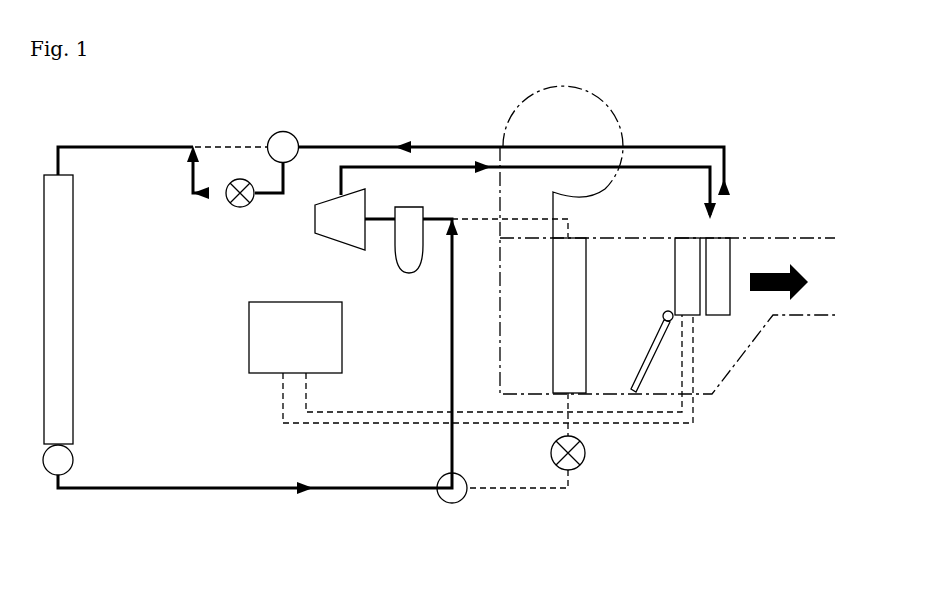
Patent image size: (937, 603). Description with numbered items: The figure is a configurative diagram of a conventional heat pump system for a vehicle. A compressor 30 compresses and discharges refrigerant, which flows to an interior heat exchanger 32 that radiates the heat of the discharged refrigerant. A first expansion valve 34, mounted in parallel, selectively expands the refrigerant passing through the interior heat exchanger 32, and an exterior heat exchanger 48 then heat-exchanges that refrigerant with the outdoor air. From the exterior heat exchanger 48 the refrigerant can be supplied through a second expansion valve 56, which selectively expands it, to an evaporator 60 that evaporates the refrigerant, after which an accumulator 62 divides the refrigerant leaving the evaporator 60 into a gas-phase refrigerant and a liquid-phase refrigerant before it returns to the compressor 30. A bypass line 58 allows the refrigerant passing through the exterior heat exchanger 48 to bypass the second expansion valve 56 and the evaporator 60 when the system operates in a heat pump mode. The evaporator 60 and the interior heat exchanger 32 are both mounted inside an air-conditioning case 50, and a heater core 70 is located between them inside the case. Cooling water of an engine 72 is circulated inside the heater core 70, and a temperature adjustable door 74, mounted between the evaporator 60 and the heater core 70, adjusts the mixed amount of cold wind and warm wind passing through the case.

The compressor 30 is at (327, 200).
The interior heat exchanger 32 is at (730, 273).
The first expansion valve 34 is at (240, 179).
The exterior heat exchanger 48 is at (74, 314).
The air-conditioning case 50 is at (743, 352).
The second expansion valve 56 is at (574, 471).
The bypass line 58 is at (450, 446).
The evaporator 60 is at (586, 380).
The accumulator 62 is at (408, 207).
The heater core 70 is at (676, 278).
The engine 72 is at (247, 344).
The temperature adjustable door 74 is at (654, 357).